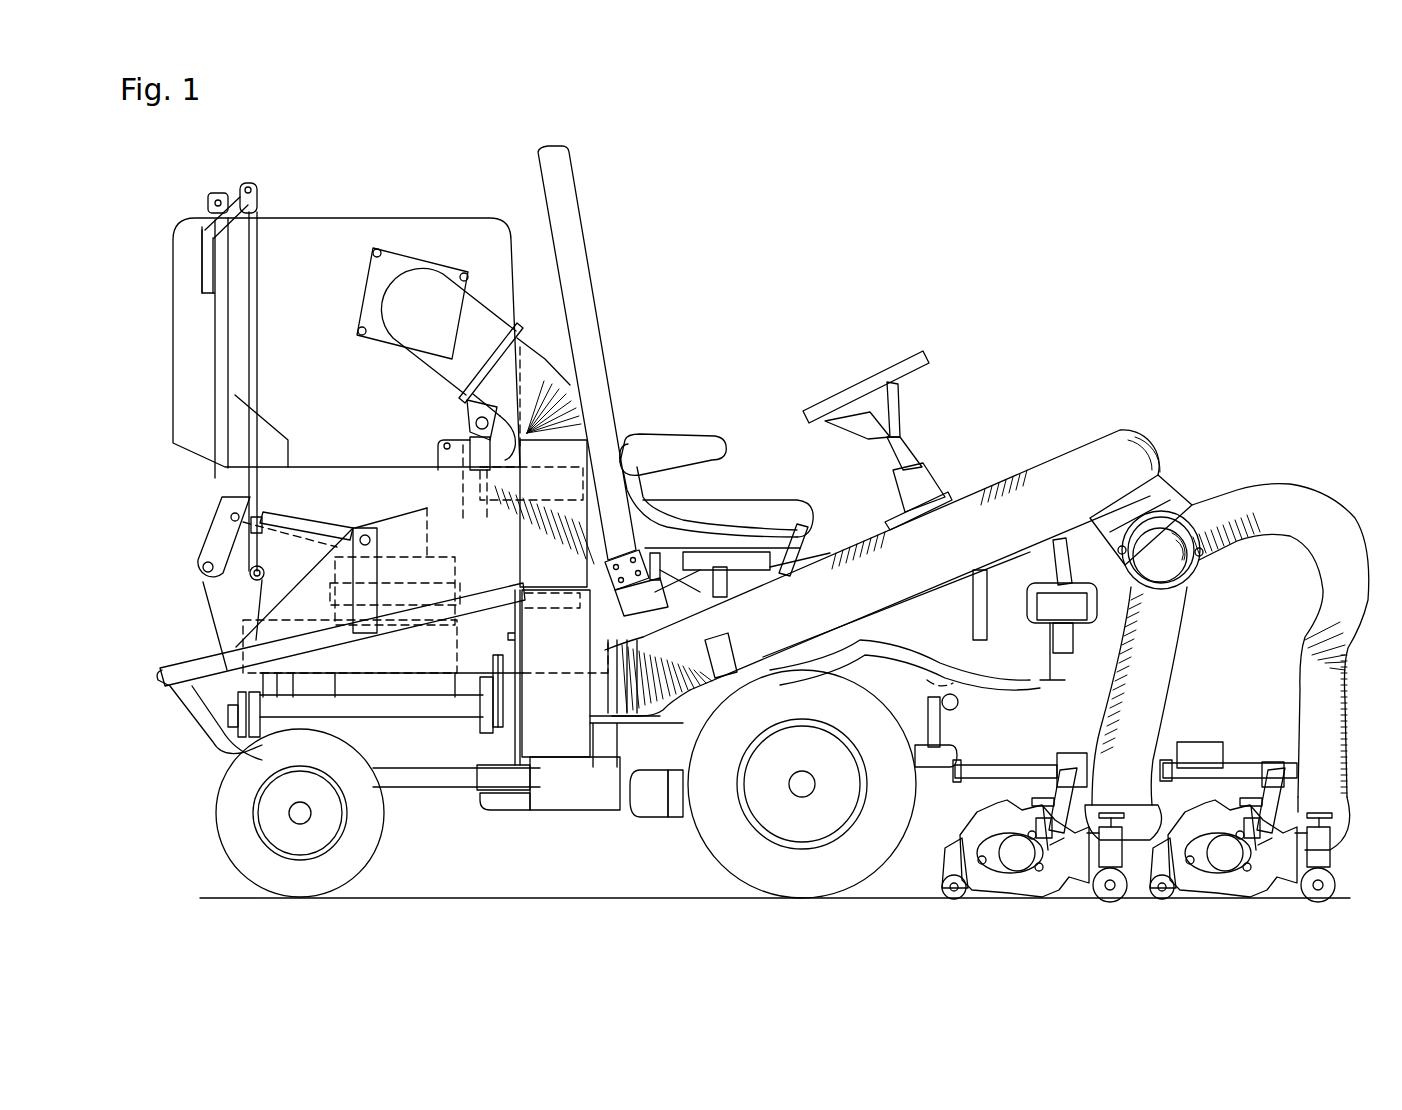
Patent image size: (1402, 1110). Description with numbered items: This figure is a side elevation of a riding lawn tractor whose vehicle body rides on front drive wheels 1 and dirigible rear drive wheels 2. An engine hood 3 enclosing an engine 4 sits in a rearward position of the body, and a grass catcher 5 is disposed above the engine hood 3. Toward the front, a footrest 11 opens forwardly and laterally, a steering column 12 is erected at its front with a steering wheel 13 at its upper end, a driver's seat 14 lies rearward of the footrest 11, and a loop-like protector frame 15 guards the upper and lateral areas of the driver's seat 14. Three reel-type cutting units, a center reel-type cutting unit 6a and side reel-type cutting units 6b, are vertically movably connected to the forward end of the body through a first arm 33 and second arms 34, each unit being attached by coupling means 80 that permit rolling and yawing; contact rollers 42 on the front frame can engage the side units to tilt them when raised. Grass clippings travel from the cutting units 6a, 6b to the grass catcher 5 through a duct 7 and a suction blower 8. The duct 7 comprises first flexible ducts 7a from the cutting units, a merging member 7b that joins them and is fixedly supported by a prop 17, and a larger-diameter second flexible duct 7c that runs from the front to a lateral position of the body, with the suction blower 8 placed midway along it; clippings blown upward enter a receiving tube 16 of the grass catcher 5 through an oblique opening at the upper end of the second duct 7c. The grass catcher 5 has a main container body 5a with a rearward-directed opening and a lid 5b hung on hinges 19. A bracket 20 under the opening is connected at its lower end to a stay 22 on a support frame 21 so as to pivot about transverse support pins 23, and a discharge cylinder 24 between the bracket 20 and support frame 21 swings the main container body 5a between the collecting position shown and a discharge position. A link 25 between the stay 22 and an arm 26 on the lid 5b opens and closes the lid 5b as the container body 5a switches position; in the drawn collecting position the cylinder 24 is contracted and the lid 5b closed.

The front drive wheels 1 is at (713, 833).
The dirigible rear drive wheels 2 is at (352, 863).
The engine hood 3 is at (403, 513).
The engine 4 is at (423, 557).
The grass catcher 5 is at (346, 311).
The main container body 5a is at (348, 258).
The lid 5b is at (202, 323).
The center reel-type cutting unit 6a is at (1228, 797).
The side reel-type cutting units 6b is at (1025, 793).
The duct 7 is at (932, 581).
The first flexible ducts 7a is at (1297, 507).
The merging member 7b is at (1170, 507).
The second flexible duct 7c is at (560, 387).
The suction blower 8 is at (555, 707).
The footrest 11 is at (897, 657).
The steering column 12 is at (937, 473).
The steering wheel 13 is at (883, 377).
The driver's seat 14 is at (633, 420).
The loop-like protector frame 15 is at (577, 230).
The receiving tube 16 is at (447, 360).
The prop 17 is at (1117, 593).
The hinges 19 is at (222, 193).
The bracket 20 is at (233, 497).
The support frame 21 is at (297, 647).
The stay 22 is at (227, 623).
The transverse support pins 23 is at (205, 563).
The discharge cylinder 24 is at (293, 530).
The link 25 is at (253, 369).
The arm 26 is at (243, 196).
The first arm 33 is at (1163, 747).
The second arms 34 is at (932, 755).
The contact rollers 42 is at (1070, 607).
The coupling means 80 is at (1207, 730).